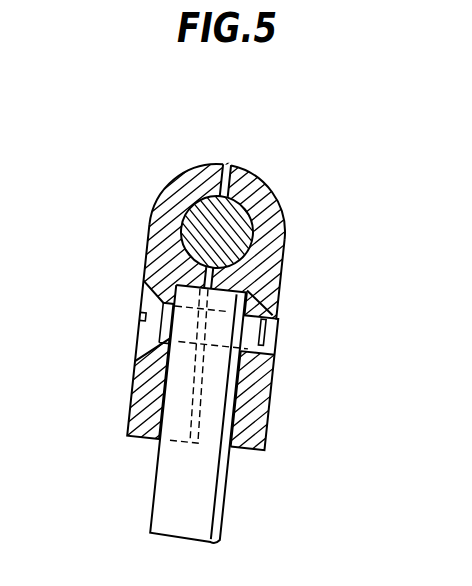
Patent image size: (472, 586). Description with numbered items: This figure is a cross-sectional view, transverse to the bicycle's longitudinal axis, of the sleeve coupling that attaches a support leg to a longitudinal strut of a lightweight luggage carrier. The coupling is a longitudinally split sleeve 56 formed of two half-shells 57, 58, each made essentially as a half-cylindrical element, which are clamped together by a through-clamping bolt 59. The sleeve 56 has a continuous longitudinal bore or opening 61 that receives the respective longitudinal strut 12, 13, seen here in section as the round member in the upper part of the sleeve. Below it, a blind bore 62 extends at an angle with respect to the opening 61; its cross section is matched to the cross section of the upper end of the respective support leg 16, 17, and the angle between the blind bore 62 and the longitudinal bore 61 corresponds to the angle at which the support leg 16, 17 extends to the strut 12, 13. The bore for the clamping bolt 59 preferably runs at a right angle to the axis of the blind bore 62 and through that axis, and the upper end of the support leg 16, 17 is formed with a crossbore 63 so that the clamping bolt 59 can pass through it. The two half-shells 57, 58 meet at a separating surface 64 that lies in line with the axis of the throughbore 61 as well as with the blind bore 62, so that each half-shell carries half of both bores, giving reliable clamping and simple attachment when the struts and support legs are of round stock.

The longitudinal strut 12 is at (216, 195).
The longitudinal strut 13 is at (186, 207).
The support leg 16 is at (247, 414).
The support leg 17 is at (217, 505).
The longitudinally split sleeve 56 is at (292, 253).
The half-shell 57 is at (275, 197).
The half-shell 58 is at (157, 203).
The through-clamping bolt 59 is at (145, 316).
The longitudinal bore 61 is at (243, 175).
The blind bore 62 is at (237, 398).
The crossbore 63 is at (267, 373).
The separating surface 64 is at (221, 164).